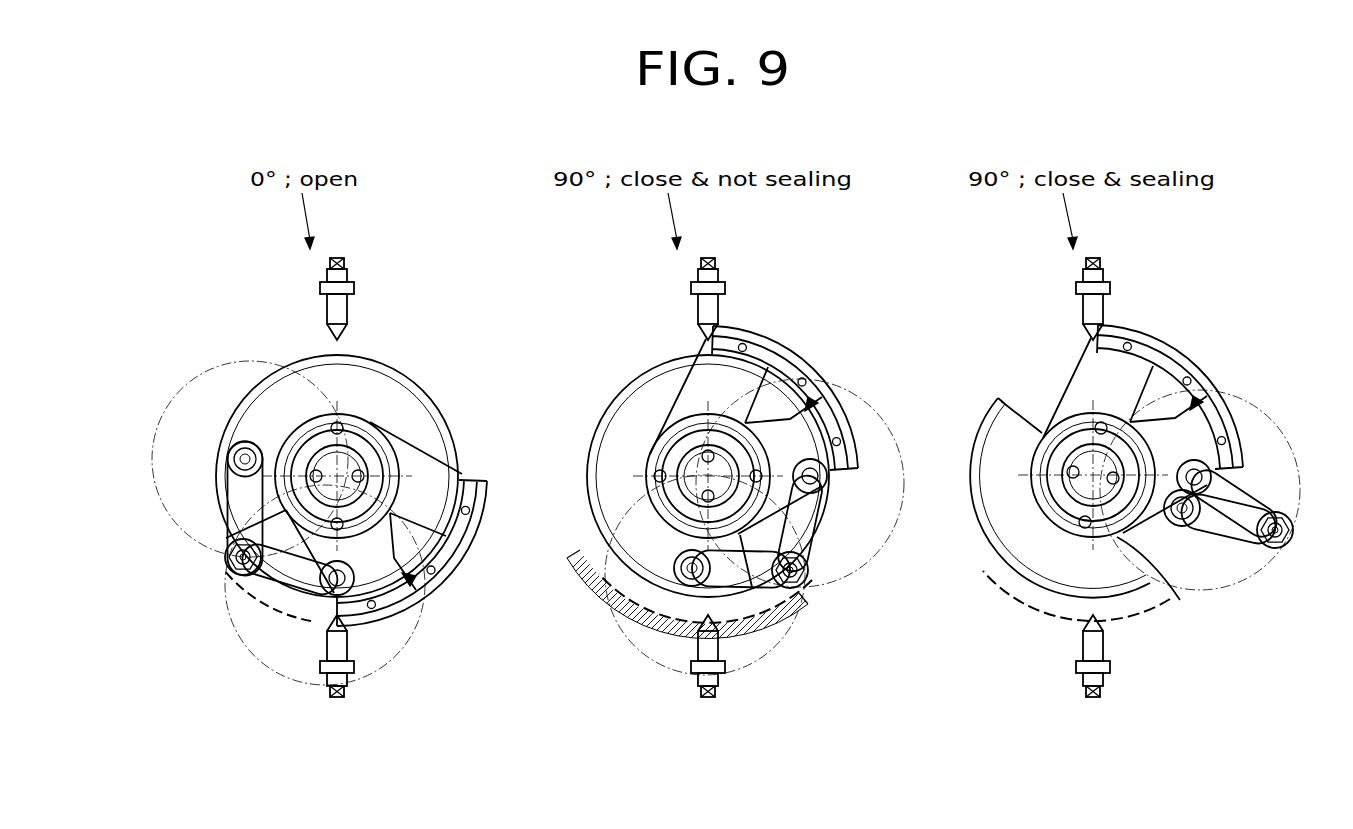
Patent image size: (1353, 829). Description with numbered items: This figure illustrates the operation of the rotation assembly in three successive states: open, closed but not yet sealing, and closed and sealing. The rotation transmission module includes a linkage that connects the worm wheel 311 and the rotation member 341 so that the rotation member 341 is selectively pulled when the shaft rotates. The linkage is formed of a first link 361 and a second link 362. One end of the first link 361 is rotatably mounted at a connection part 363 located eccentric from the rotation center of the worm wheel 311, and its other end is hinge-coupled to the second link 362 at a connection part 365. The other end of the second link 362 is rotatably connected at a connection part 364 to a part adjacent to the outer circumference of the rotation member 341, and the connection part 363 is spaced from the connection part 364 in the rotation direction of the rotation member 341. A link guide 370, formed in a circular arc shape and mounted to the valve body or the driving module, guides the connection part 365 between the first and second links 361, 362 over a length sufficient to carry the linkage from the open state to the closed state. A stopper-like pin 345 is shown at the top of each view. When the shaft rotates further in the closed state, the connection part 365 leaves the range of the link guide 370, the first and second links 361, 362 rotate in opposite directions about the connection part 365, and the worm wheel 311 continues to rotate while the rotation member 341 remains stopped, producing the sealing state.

The worm wheel 311 is at (391, 395).
The rotation member 341 is at (422, 459).
The fixing pin 345 is at (1083, 318).
The first link 361 is at (227, 514).
The second link 362 is at (285, 592).
The connection part 363 is at (227, 459).
The connection part 364 is at (346, 594).
The connection part 365 is at (226, 562).
The link guide 370 is at (620, 618).